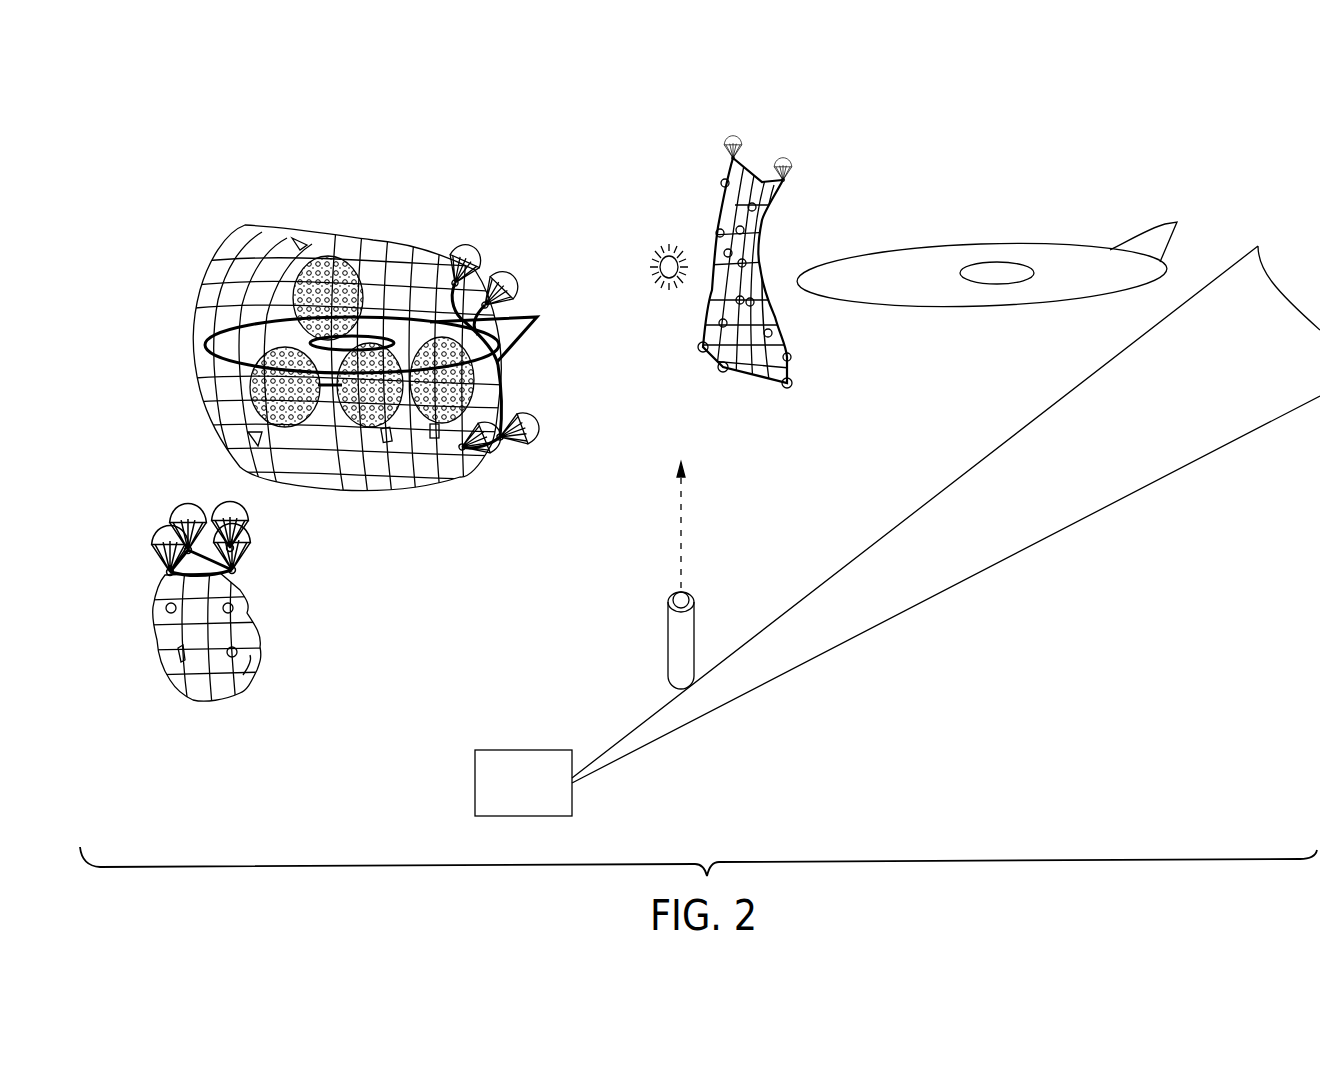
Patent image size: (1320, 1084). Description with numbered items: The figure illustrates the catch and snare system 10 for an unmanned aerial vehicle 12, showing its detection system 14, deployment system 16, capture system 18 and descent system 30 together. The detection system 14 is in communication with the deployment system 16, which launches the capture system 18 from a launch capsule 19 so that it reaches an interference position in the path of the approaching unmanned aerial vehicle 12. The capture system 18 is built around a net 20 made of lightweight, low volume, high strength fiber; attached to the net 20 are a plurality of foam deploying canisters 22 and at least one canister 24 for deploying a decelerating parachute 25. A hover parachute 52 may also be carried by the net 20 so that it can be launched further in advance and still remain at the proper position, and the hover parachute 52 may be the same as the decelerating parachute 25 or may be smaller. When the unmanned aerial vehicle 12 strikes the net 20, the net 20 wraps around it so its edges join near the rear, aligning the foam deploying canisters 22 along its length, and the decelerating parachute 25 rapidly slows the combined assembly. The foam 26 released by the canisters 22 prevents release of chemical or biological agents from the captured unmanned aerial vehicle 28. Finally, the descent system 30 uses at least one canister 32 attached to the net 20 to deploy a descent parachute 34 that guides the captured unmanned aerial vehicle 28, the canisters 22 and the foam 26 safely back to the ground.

The catch and snare system 10 is at (453, 110).
The unmanned aerial vehicle 12 is at (992, 243).
The detection system 14 is at (535, 795).
The deployment system 16 is at (668, 648).
The capture system 18 is at (212, 206).
The launch capsule 19 is at (651, 256).
The net 20 is at (220, 285).
The foam deploying canisters 22 is at (300, 248).
The canister 24 is at (723, 373).
The decelerating parachute 25 is at (466, 243).
The foam 26 is at (340, 275).
The captured unmanned aerial vehicle 28 is at (207, 345).
The descent system 30 is at (136, 518).
The canister 32 is at (168, 573).
The descent parachute 34 is at (255, 530).
The hover parachute 52 is at (734, 134).